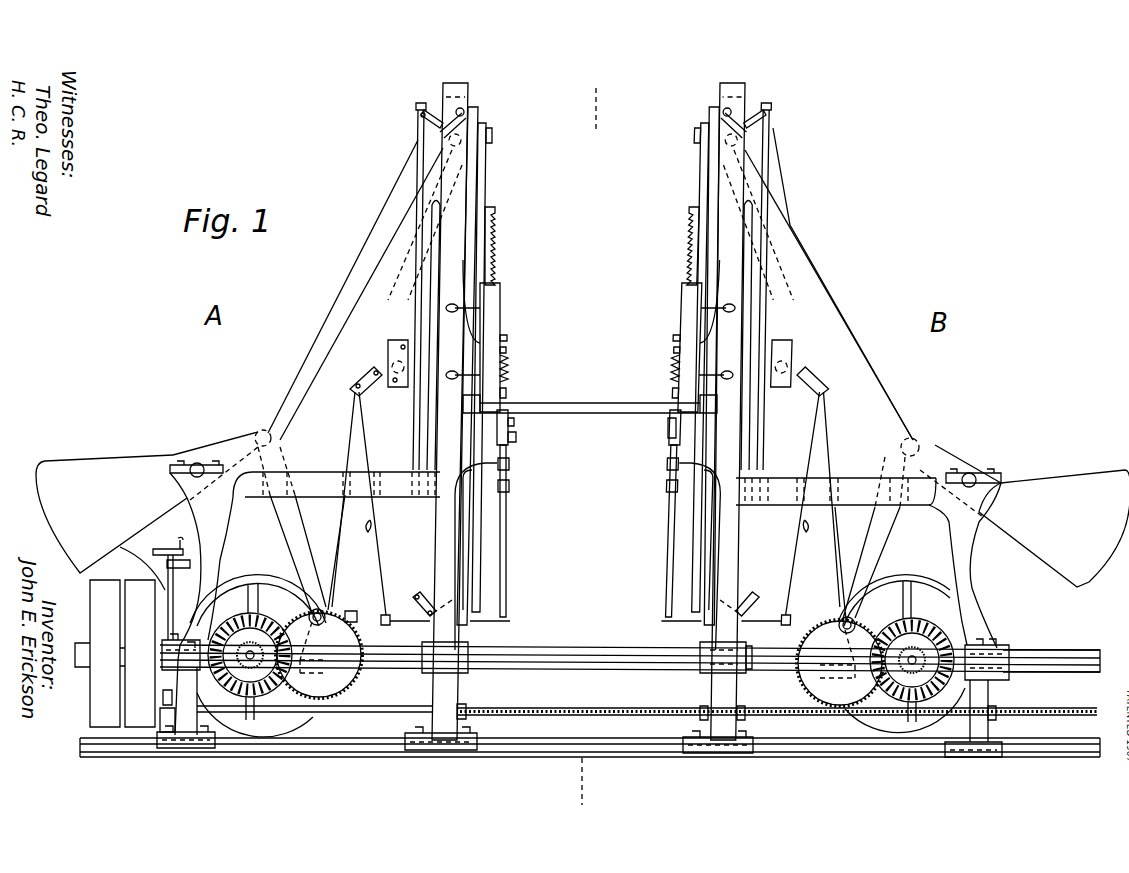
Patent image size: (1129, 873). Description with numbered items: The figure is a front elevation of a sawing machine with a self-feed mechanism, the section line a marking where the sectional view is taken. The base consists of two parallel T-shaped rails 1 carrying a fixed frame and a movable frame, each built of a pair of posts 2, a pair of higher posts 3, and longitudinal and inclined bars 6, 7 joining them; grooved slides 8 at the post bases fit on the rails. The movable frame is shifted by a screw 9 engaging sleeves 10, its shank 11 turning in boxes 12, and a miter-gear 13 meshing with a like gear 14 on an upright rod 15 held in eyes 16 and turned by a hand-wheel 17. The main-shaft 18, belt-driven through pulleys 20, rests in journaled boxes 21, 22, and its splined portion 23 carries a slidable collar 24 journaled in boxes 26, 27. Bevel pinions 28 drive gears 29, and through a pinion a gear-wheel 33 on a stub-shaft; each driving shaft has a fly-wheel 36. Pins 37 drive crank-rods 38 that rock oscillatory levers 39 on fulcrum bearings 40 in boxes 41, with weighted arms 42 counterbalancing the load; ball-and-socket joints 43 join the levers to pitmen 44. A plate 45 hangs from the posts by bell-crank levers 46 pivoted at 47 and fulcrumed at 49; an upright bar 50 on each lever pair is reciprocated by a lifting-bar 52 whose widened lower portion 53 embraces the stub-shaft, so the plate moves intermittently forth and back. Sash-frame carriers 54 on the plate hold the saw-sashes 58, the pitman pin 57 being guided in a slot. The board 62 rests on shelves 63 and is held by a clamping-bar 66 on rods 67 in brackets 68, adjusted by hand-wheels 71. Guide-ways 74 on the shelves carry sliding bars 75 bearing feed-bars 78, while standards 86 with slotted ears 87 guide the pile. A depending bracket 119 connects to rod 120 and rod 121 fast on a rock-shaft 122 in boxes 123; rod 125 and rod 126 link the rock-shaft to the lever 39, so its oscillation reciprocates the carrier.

The rails 1 is at (590, 769).
The posts 2 is at (592, 642).
The higher posts 3 is at (594, 442).
The longitudinal bars 6 is at (584, 477).
The inclined bars 7 is at (590, 290).
The grooved slides 8 is at (579, 763).
The screw 9 is at (777, 703).
The sleeves 10 is at (842, 708).
The shank 11 is at (314, 749).
The boxes 12 is at (486, 718).
The miter-gear 13 is at (167, 751).
The miter-gear 14 is at (149, 742).
The upright rod 15 is at (123, 560).
The eyes 16 is at (144, 671).
The hand-wheel 17 is at (150, 530).
The main-shaft 18 is at (1051, 642).
The pulleys 20 is at (111, 687).
The journaled box 21 is at (464, 668).
The journaled box 22 is at (197, 632).
The spline 23 is at (630, 657).
The slidable collar 24 is at (696, 670).
The box 26 is at (759, 674).
The box 27 is at (1005, 635).
The bevel pinions 28 is at (584, 748).
The gears 29 is at (581, 707).
The gear-wheel 33 is at (580, 707).
The fly-wheel 36 is at (600, 647).
The pins 37 is at (586, 534).
The crank-rods 38 is at (585, 525).
The oscillatory levers 39 is at (587, 452).
The fulcrum bearings 40 is at (597, 444).
The boxes 41 is at (605, 436).
The weighted arms 42 is at (582, 498).
The ball-and-socket joints 43 is at (626, 368).
The pitmen 44 is at (599, 336).
The plate 45 is at (593, 373).
The bell-crank levers 46 is at (599, 377).
The pivot 47 is at (637, 112).
The fulcrum 49 is at (599, 136).
The upright bar 50 is at (599, 286).
The lifting-bar 52 is at (596, 284).
The lower portion of lifting-bar 53 is at (577, 663).
The sash-frame carriers 54 is at (593, 367).
The pitman pin 57 is at (593, 132).
The saw-sashes 58 is at (592, 246).
The board 62 is at (590, 391).
The shelves 63 is at (588, 427).
The clamping-bar 66 is at (589, 381).
The rods 67 is at (590, 340).
The brackets 68 is at (590, 363).
The hand-wheels 71 is at (590, 325).
The guide-ways 74 is at (538, 444).
The sliding bar 75 is at (533, 427).
The feed-bar 78 is at (647, 429).
The standards 86 is at (591, 346).
The slotted ears 87 is at (591, 316).
The depending bracket 119 is at (588, 461).
The rod 120 is at (588, 489).
The rod 121 is at (590, 531).
The rock-shaft 122 is at (586, 620).
The boxes 123 is at (582, 609).
The rod 125 is at (589, 503).
The rod 126 is at (587, 439).
The section line a is at (589, 445).